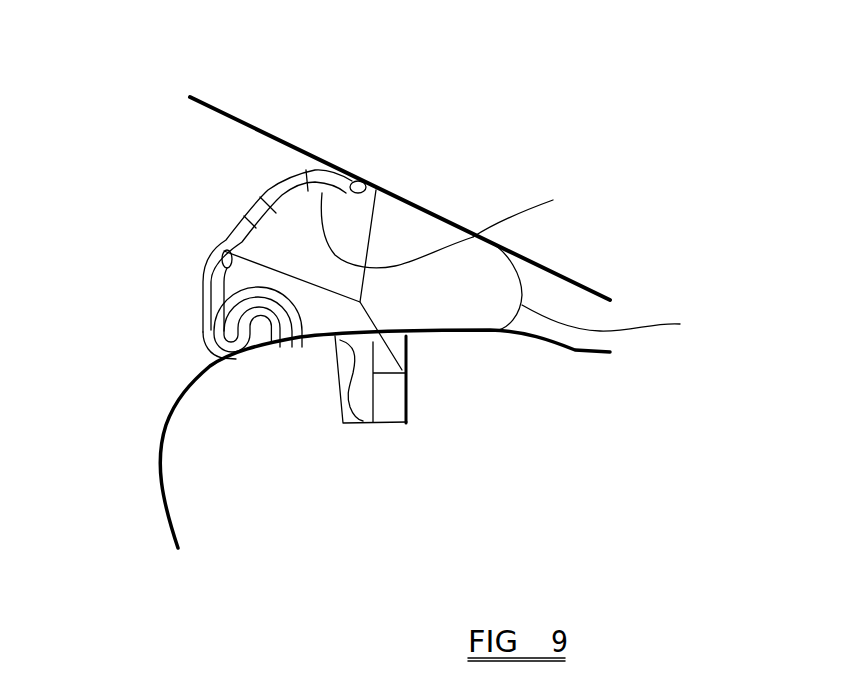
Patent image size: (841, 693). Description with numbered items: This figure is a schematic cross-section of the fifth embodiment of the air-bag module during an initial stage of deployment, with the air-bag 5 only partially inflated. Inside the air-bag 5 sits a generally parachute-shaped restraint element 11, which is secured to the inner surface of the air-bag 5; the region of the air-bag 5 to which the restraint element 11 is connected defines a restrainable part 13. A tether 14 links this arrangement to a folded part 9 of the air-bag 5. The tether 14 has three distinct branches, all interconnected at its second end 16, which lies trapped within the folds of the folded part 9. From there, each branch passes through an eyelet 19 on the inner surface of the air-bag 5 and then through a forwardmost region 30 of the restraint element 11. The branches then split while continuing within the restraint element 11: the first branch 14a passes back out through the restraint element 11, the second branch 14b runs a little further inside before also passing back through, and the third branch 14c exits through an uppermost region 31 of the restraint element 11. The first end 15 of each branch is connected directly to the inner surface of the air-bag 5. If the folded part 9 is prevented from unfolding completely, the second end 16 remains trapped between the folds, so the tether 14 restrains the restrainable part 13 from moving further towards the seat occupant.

The air-bag 5 is at (610, 323).
The folded part 9 is at (188, 355).
The restraint element 11 is at (347, 227).
The restrainable part 13 is at (230, 238).
The tether 14 is at (203, 327).
The first branch 14a is at (244, 216).
The second branch 14b is at (260, 197).
The third branch 14c is at (603, 203).
The first end 15 is at (306, 170).
The second end 16 is at (296, 338).
The eyelet 19 is at (211, 277).
The forwardmost region 30 is at (224, 256).
The uppermost region 31 is at (376, 190).